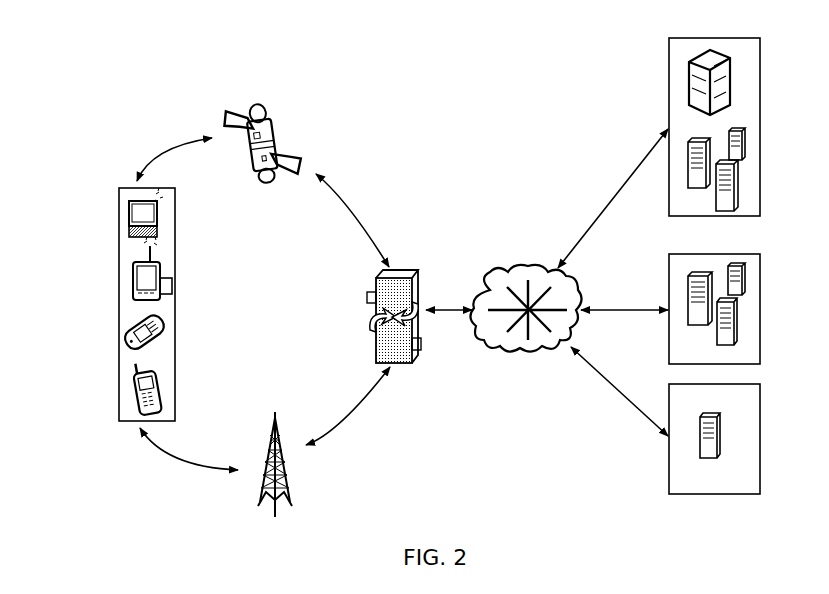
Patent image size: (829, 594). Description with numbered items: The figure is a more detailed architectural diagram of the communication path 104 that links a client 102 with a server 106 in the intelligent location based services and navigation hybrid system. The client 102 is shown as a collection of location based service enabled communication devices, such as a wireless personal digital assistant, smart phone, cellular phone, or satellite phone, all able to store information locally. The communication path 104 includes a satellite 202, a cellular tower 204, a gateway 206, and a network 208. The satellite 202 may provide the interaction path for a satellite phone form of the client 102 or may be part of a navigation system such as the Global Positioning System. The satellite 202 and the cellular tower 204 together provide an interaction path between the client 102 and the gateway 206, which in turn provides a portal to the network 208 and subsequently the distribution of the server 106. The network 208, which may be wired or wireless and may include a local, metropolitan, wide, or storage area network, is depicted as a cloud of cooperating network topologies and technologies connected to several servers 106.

The client 102 is at (119, 257).
The communication path 104 is at (150, 117).
The server 106 is at (670, 83).
The satellite 202 is at (263, 103).
The cellular tower 204 is at (290, 497).
The gateway 206 is at (412, 271).
The network 208 is at (515, 353).